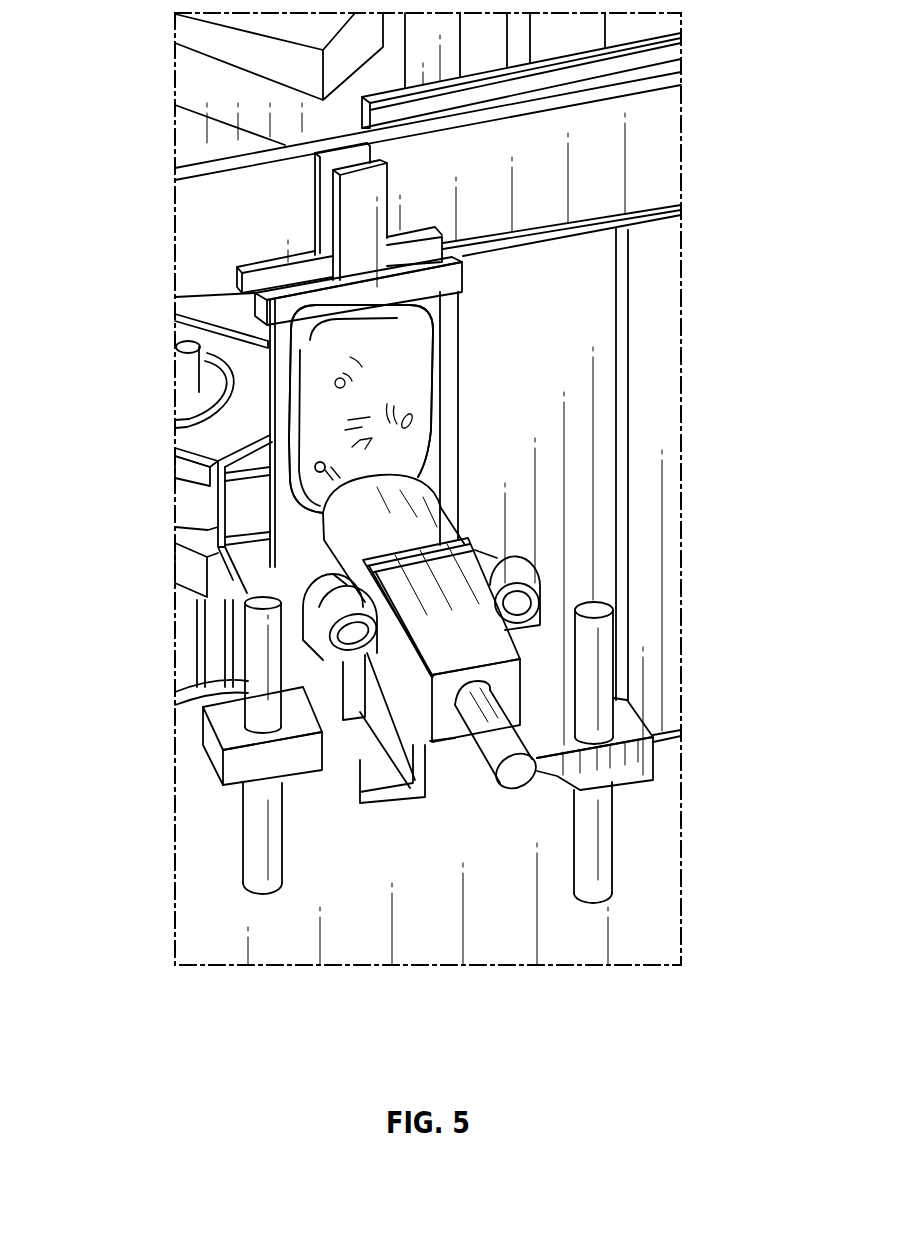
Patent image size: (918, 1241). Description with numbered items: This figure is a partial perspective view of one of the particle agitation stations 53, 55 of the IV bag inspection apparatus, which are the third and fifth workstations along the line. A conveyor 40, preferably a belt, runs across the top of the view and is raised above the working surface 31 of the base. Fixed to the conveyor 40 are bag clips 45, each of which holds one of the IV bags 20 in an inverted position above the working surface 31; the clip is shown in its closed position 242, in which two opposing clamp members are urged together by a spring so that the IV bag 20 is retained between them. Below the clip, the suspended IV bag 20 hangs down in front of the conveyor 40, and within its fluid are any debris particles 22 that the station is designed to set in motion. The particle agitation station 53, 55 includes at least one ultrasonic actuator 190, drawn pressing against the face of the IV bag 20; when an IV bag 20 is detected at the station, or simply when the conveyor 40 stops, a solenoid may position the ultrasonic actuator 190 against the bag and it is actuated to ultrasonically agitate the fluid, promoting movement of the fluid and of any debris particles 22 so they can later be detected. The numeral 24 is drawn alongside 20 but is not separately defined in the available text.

The conveyor 40 is at (667, 141).
The bag clip 45 is at (340, 248).
The closed position 242 is at (224, 273).
The debris particles 22 is at (315, 466).
The IV bag 20 is at (433, 322).
The panel 24 is at (433, 322).
The ultrasonic actuator 190 is at (345, 523).
The working surface 31 is at (560, 850).
The particle agitation station 53 is at (356, 937).
The particle agitation station 55 is at (356, 937).